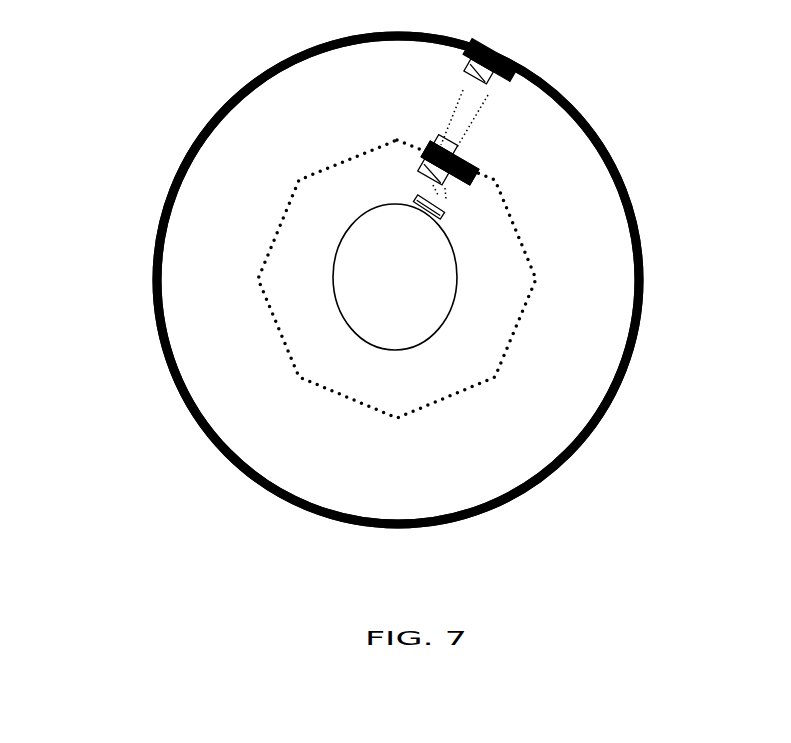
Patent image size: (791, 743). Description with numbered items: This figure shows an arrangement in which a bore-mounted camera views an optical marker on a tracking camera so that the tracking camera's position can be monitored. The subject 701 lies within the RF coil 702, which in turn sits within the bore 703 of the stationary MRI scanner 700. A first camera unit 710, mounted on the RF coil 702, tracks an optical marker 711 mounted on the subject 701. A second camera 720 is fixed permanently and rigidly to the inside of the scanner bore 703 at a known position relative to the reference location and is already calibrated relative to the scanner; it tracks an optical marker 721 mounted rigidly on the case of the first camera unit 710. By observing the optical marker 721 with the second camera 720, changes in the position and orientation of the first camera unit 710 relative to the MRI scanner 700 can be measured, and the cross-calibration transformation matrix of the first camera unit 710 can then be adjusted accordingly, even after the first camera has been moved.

The MRI scanner 700 is at (158, 432).
The subject 701 is at (405, 247).
The RF coil 702 is at (330, 164).
The bore 703 is at (632, 354).
The first camera unit 710 is at (457, 183).
The optical marker 711 is at (441, 212).
The second camera 720 is at (465, 58).
The optical marker 721 is at (437, 145).